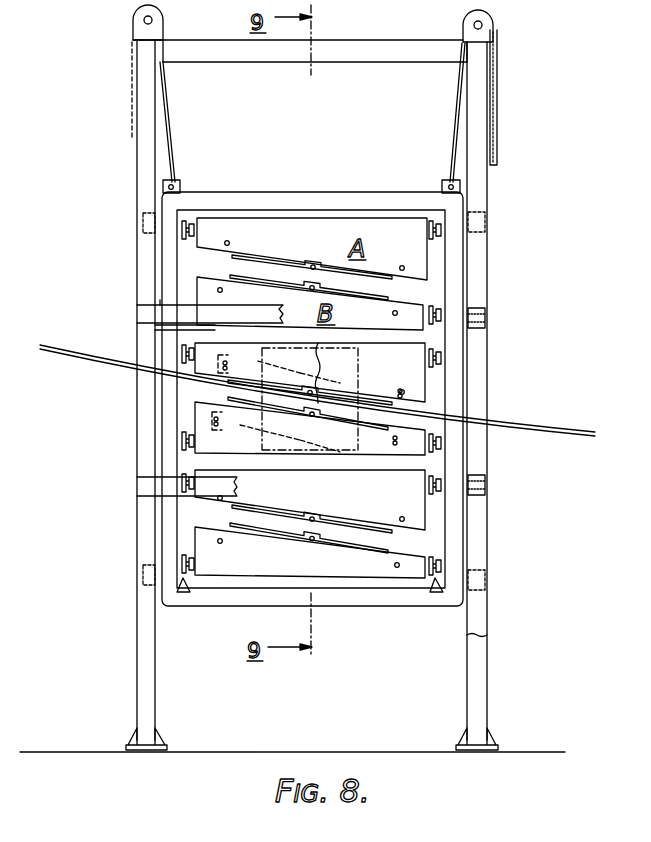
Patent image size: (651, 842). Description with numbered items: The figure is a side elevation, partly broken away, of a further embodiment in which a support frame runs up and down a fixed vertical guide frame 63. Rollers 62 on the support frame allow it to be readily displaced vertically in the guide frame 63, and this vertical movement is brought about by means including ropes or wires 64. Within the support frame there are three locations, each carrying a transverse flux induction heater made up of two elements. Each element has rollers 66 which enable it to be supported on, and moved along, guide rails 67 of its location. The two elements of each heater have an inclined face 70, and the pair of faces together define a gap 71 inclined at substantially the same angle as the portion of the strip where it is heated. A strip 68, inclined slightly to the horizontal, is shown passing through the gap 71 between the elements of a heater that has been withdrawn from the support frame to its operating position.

The rollers 62 is at (143, 224).
The vertical guide frame 63 is at (482, 130).
The ropes or wires 64 is at (170, 128).
The rollers 66 is at (445, 237).
The guide rails 67 is at (186, 593).
The strip 68 is at (557, 436).
The inclined face 70 is at (350, 521).
The gap 71 is at (408, 410).